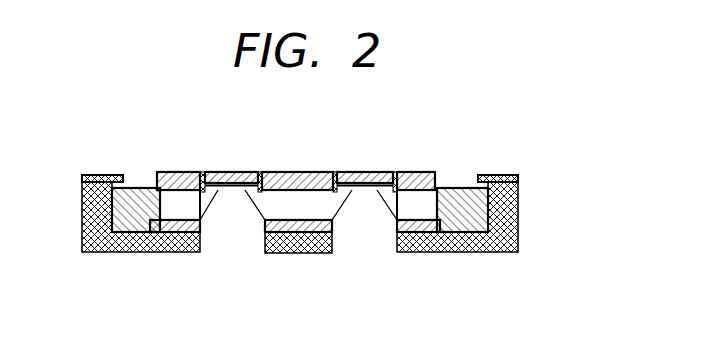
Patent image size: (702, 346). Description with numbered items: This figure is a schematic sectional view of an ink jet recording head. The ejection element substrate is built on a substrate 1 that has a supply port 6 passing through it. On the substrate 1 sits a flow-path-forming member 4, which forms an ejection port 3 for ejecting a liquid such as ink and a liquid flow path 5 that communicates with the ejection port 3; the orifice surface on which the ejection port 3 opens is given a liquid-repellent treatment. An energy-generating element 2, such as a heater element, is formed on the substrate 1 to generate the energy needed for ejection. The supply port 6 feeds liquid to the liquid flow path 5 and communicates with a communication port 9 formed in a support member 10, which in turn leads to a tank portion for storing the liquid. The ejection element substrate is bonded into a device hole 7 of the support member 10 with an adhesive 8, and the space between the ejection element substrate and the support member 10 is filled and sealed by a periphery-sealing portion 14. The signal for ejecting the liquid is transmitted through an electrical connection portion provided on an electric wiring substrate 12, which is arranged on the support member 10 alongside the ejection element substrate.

The substrate 1 is at (290, 235).
The energy-generating element 2 is at (325, 190).
The ejection port 3 is at (200, 171).
The flow-path-forming member 4 is at (315, 171).
The liquid flow path 5 is at (262, 171).
The supply port 6 is at (225, 225).
The device hole 7 is at (112, 235).
The adhesive 8 is at (335, 222).
The communication port 9 is at (240, 238).
The support member 10 is at (320, 245).
The electric wiring substrate 12 is at (498, 175).
The periphery-sealing portion 14 is at (140, 186).